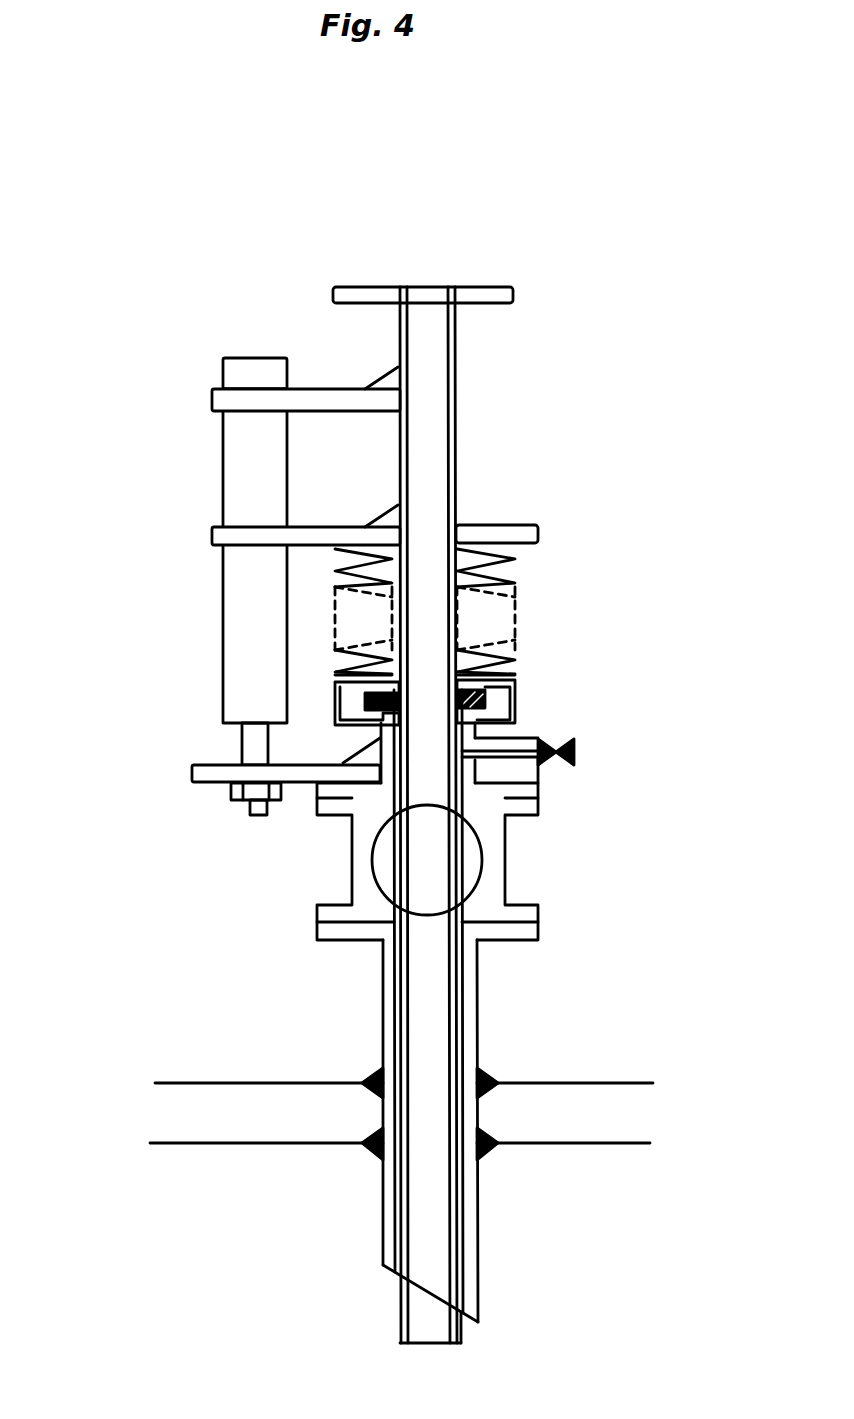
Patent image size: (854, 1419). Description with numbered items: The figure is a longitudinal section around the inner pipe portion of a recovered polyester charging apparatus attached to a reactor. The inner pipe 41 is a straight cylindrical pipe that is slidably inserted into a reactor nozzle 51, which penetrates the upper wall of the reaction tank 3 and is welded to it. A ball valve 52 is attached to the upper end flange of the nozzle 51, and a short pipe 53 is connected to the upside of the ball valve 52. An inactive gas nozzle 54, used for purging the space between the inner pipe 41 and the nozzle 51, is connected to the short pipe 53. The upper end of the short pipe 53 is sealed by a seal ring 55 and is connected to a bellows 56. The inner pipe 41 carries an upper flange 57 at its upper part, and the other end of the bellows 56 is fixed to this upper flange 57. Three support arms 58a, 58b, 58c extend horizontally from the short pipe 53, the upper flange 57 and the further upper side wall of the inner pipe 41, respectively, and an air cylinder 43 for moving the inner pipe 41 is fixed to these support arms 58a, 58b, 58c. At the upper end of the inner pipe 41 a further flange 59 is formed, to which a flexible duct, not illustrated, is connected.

The reaction tank 3 is at (547, 1088).
The inner pipe 41 is at (455, 430).
The air cylinder 43 is at (245, 458).
The reactor nozzle 51 is at (472, 1248).
The ball valve 52 is at (480, 857).
The short pipe 53 is at (480, 737).
The inactive gas nozzle 54 is at (574, 753).
The seal ring 55 is at (515, 687).
The bellows 56 is at (510, 580).
The upper flange 57 is at (518, 525).
The support arm 58a is at (205, 765).
The support arm 58b is at (213, 533).
The support arm 58c is at (325, 389).
The further flange 59 is at (515, 293).